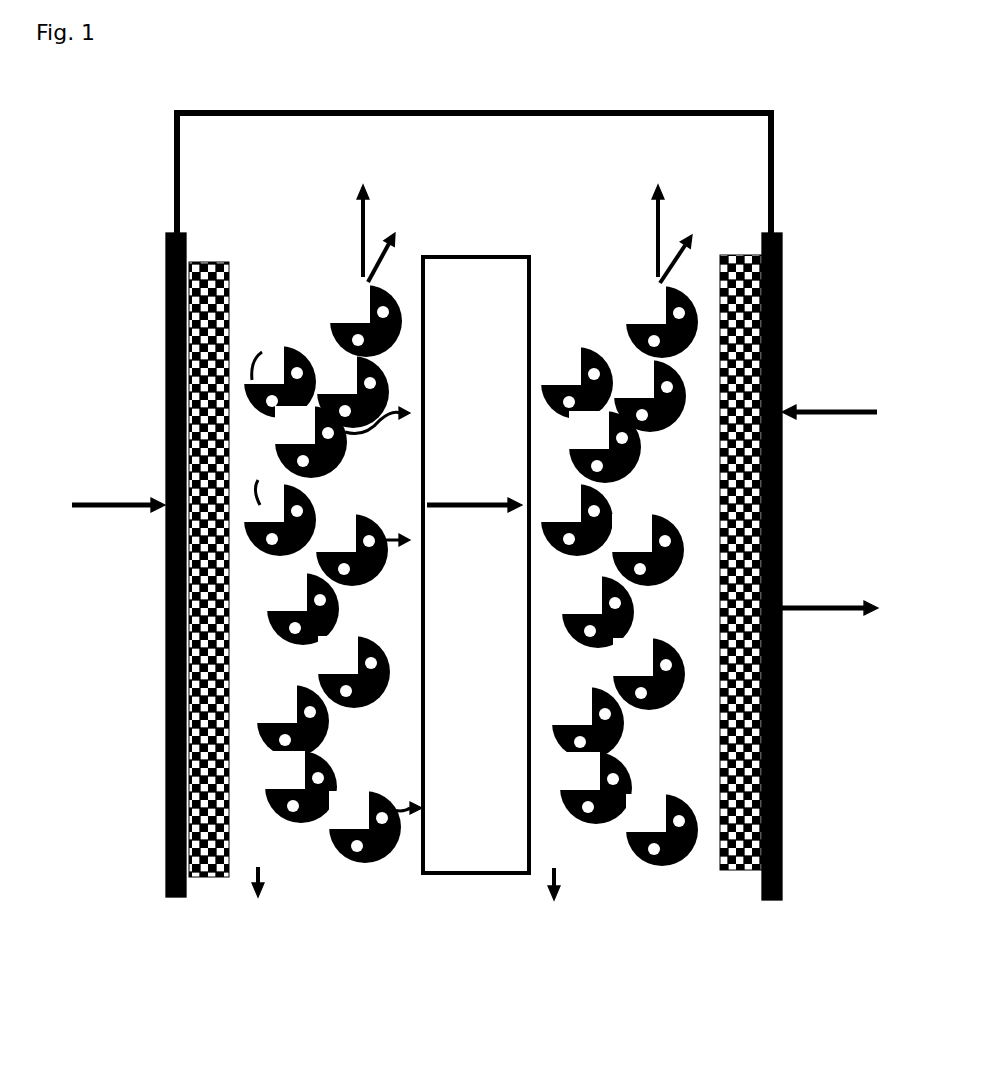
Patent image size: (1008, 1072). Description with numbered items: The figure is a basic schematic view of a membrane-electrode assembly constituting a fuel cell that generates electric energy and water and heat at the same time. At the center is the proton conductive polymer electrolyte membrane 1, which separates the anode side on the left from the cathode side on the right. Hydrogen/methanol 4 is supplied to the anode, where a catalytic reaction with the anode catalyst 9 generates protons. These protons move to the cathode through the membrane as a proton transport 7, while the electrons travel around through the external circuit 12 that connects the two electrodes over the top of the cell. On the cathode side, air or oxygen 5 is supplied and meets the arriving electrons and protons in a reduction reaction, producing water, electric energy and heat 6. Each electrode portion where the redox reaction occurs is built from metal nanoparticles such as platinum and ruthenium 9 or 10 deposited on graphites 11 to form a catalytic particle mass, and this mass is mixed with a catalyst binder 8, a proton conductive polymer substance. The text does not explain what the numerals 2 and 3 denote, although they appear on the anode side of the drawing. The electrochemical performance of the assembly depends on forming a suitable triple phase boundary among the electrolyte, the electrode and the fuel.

The proton conductive polymer electrolyte membrane 1 is at (476, 565).
The anode electrode 2 is at (209, 877).
The anode current collector 3 is at (176, 897).
The hydrogen/methanol 4 is at (103, 504).
The air or oxygen 5 is at (843, 411).
The water, electric energy and heat 6 is at (843, 607).
The proton transport 7 is at (384, 687).
The catalyst binder 8 is at (555, 908).
The anode catalyst 9 is at (366, 273).
The metal nanoparticles 10 is at (669, 276).
The graphites 11 is at (505, 209).
The external circuit 12 is at (474, 148).